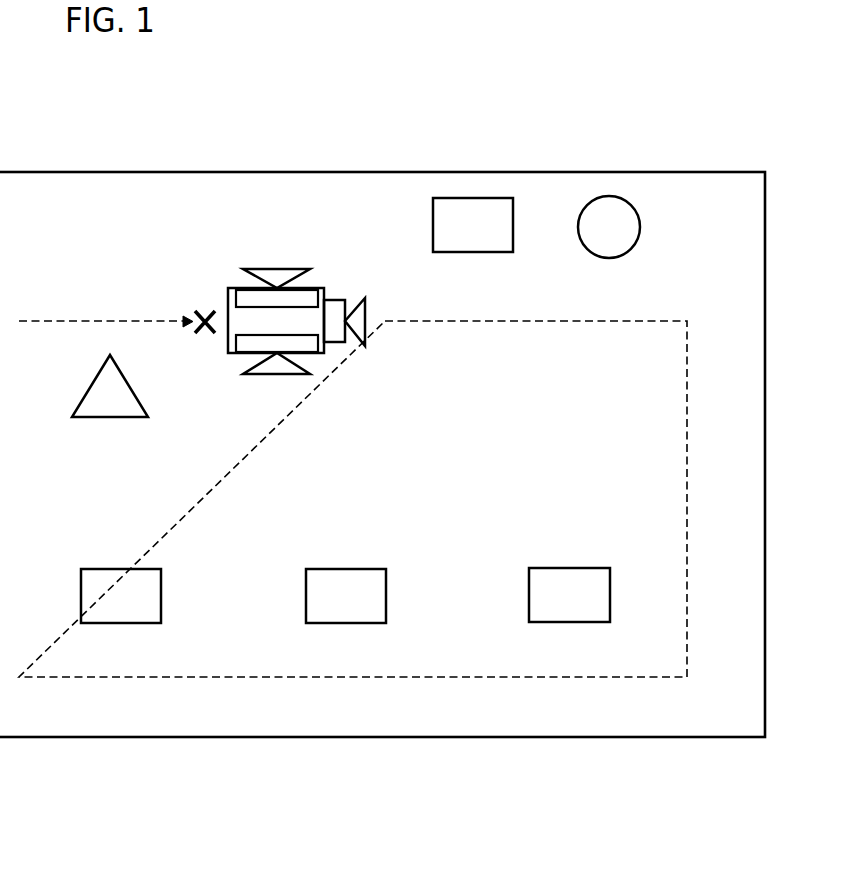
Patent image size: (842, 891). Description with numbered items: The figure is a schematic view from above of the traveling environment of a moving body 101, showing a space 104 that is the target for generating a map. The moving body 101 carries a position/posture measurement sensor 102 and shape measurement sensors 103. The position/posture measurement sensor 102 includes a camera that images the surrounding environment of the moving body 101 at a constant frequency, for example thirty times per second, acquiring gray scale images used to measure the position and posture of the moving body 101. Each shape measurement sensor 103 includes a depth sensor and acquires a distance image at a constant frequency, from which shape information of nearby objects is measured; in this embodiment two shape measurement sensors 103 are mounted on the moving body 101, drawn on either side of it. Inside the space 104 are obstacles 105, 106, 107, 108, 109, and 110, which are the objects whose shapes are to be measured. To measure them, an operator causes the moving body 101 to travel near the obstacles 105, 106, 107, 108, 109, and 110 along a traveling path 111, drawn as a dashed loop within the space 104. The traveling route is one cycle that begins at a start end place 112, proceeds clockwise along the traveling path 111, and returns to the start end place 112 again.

The moving body 101 is at (228, 290).
The position/posture measurement sensor 102 is at (365, 317).
The shape measurement sensor 103 is at (277, 269).
The space 104 is at (58, 172).
The obstacle 105 is at (433, 236).
The obstacle 106 is at (578, 220).
The obstacle 107 is at (565, 568).
The obstacle 108 is at (348, 569).
The obstacle 109 is at (135, 569).
The obstacle 110 is at (130, 417).
The traveling path 111 is at (70, 320).
The start end place 112 is at (196, 311).